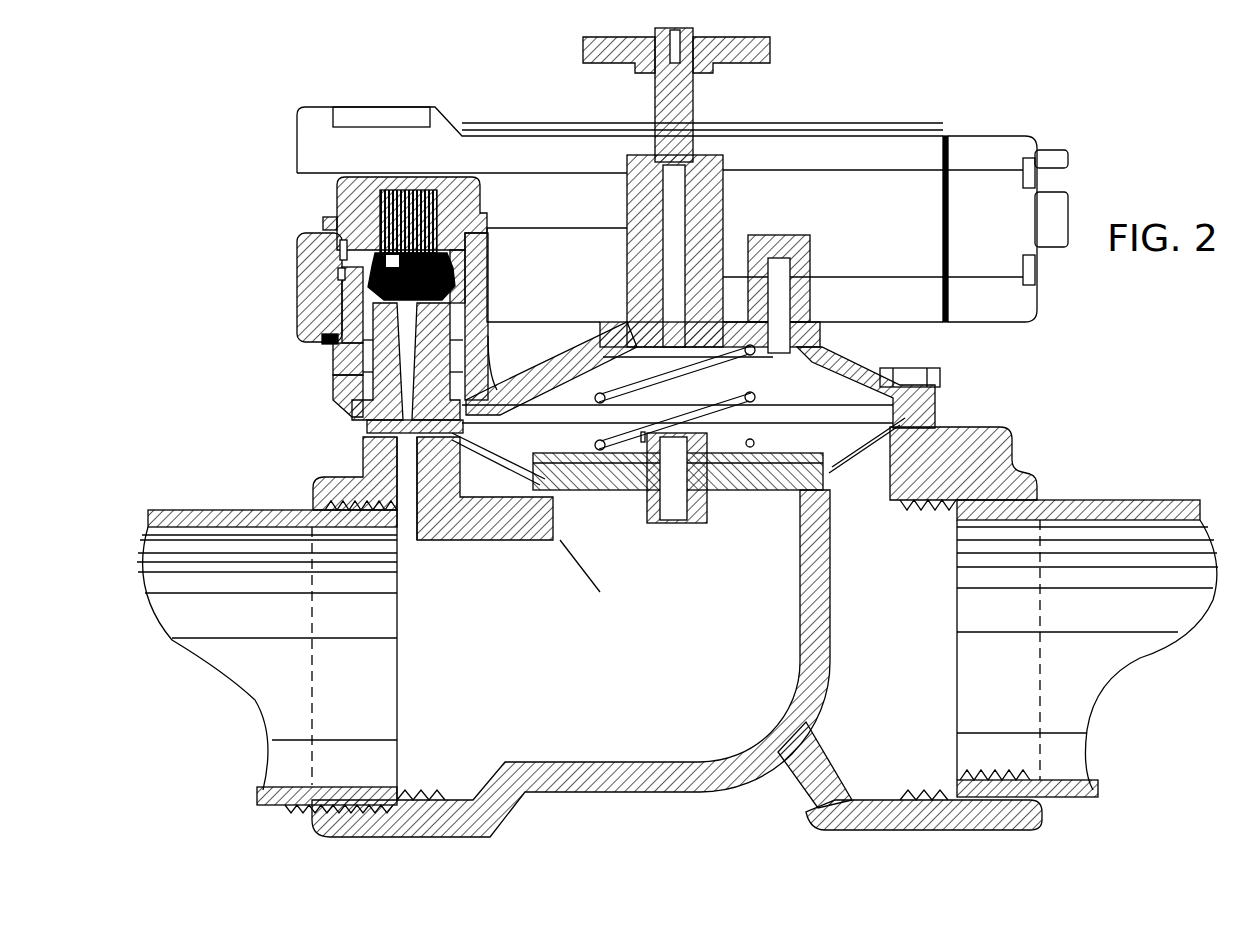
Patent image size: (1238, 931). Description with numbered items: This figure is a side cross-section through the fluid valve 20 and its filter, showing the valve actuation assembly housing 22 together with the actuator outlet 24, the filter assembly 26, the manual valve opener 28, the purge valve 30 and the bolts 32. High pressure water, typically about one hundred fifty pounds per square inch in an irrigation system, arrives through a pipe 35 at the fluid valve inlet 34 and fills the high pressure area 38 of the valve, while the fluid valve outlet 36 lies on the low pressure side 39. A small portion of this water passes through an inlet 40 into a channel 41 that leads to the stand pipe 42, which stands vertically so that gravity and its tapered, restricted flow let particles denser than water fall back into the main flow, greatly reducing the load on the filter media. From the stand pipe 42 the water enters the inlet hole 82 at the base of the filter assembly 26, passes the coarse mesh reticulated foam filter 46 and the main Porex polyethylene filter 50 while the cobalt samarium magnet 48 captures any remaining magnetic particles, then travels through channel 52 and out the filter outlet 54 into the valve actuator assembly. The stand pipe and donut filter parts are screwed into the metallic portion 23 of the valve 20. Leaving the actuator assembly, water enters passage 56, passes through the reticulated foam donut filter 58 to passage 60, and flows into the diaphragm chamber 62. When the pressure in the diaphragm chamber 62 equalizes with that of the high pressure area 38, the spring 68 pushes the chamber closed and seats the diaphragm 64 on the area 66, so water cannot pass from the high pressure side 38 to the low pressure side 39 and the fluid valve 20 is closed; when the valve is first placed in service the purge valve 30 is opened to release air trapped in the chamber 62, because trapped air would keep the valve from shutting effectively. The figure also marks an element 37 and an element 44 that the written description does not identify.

The fluid valve 20 is at (960, 90).
The valve actuation assembly housing 22 is at (780, 128).
The metallic portion 23 is at (335, 385).
The actuator outlet 24 is at (1040, 182).
The filter assembly 26 is at (336, 192).
The manual valve opener 28 is at (766, 41).
The purge valve 30 is at (808, 242).
The bolts 32 is at (940, 368).
The fluid valve inlet 34 is at (312, 709).
The pipe 35 is at (227, 508).
The fluid valve outlet 36 is at (1042, 673).
The outlet pipe wall 37 is at (1100, 500).
The high pressure area 38 is at (603, 690).
The low pressure side 39 is at (890, 703).
The inlet 40 is at (408, 500).
The channel 41 is at (365, 456).
The stand pipe 42 is at (358, 409).
The knob lower seal 44 is at (318, 298).
The filter 46 is at (312, 273).
The magnet 48 is at (310, 255).
The filter 50 is at (335, 200).
The channel 52 is at (417, 197).
The filter outlet 54 is at (490, 268).
The passage 56 is at (472, 345).
The donut filter 58 is at (338, 365).
The passage 60 is at (470, 424).
The diaphragm chamber 62 is at (585, 372).
The diaphragm 64 is at (604, 491).
The area 66 is at (522, 482).
The spring 68 is at (748, 398).
The inlet hole 82 is at (330, 345).